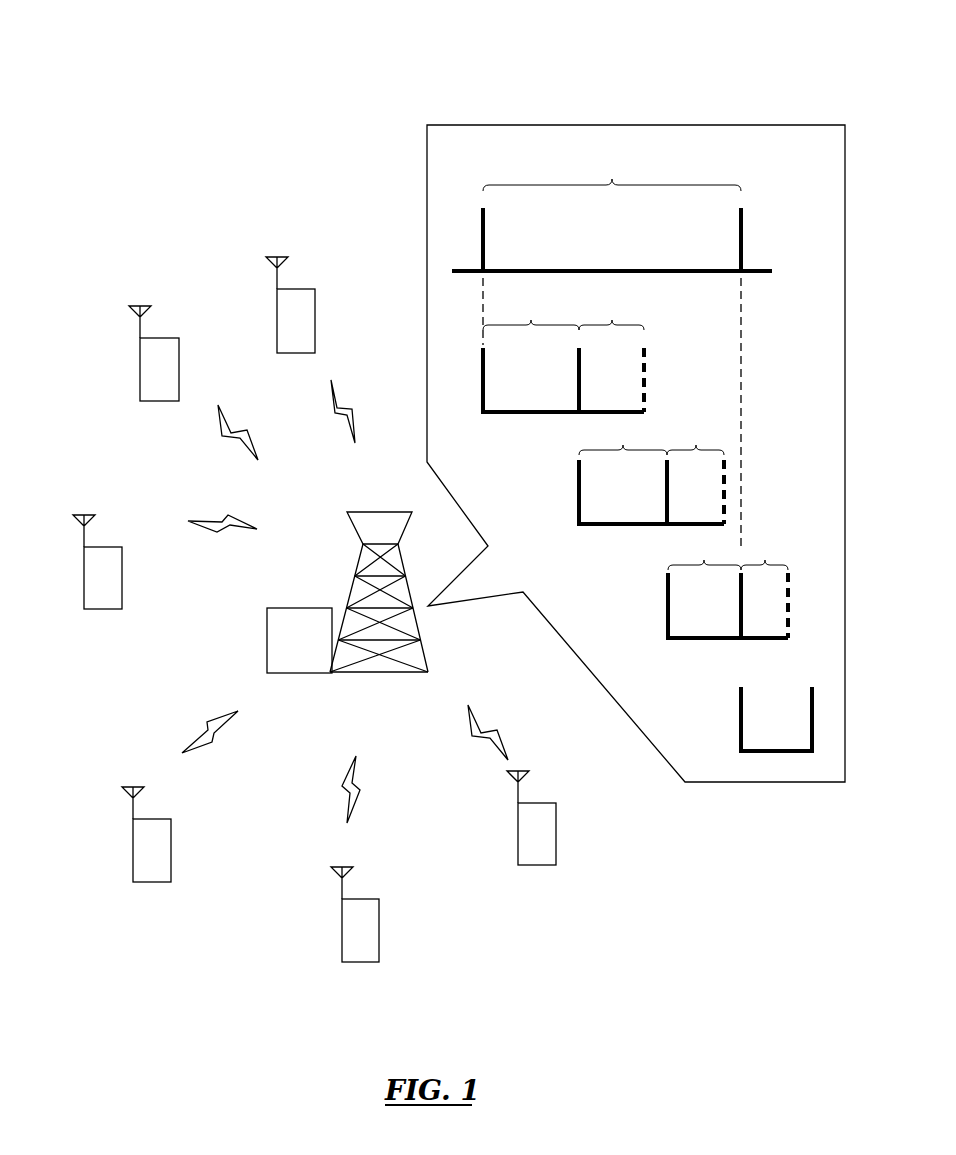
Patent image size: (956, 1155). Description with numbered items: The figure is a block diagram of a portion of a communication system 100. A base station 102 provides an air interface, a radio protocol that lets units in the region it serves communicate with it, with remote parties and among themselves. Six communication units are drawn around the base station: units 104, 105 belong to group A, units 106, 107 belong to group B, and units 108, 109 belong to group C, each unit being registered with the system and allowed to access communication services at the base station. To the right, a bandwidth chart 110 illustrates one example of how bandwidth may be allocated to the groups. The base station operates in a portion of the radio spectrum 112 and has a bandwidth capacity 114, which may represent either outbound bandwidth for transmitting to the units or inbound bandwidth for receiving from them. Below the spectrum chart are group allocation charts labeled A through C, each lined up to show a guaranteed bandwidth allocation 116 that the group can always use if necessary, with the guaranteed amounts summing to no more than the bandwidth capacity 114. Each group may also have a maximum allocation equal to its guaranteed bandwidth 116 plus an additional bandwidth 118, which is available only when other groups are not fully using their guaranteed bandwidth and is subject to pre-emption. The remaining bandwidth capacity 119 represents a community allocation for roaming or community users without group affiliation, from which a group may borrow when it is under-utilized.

The communication system 100 is at (108, 31).
The base station 102 is at (299, 608).
The communication unit 104 is at (556, 830).
The communication unit 105 is at (379, 927).
The communication unit 106 is at (133, 847).
The communication unit 107 is at (84, 574).
The communication unit 108 is at (140, 373).
The communication unit 109 is at (315, 301).
The bandwidth chart 110 is at (500, 125).
The radio spectrum 112 is at (755, 271).
The bandwidth capacity 114 is at (612, 173).
The guaranteed bandwidth allocation 116 is at (612, 431).
The additional bandwidth 118 is at (684, 431).
The remaining bandwidth capacity 119 is at (781, 751).